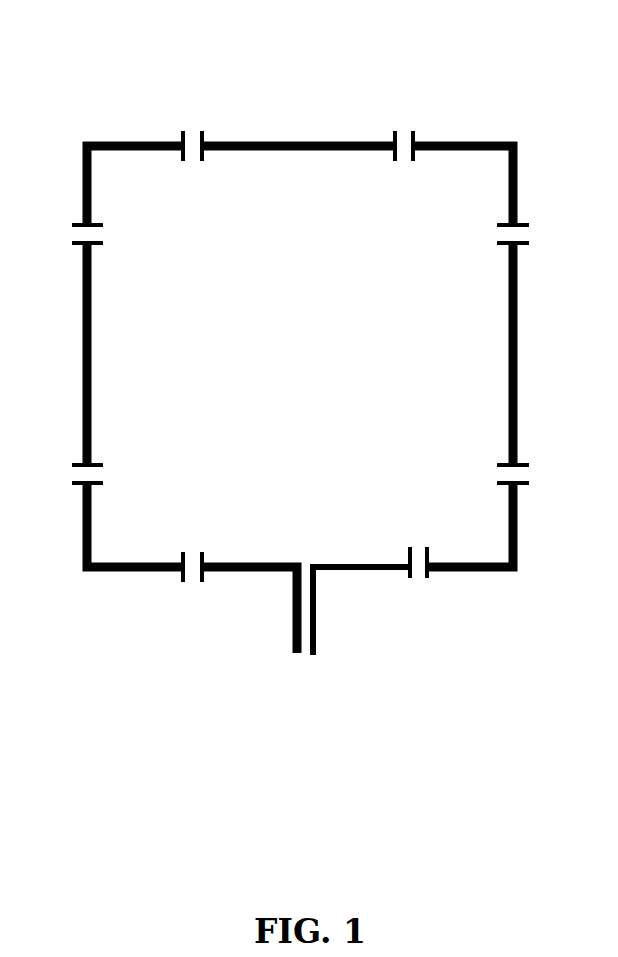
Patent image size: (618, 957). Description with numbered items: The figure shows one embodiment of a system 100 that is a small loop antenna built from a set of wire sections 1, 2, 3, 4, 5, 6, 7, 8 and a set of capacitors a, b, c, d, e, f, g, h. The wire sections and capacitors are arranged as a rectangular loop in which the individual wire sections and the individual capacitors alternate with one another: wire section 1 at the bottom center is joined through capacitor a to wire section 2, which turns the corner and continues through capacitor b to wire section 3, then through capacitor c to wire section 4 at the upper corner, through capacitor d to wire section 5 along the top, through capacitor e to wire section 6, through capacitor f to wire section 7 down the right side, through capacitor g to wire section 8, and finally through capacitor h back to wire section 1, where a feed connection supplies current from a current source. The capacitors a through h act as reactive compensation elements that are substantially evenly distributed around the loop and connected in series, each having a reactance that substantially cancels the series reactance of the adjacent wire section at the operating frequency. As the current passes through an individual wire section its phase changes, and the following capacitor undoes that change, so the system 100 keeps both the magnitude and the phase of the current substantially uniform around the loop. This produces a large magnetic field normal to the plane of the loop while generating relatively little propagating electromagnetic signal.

The system 100 is at (311, 50).
The wire section 1 is at (306, 577).
The wire section 2 is at (135, 525).
The wire section 3 is at (117, 354).
The wire section 4 is at (135, 185).
The wire section 5 is at (298, 180).
The wire section 6 is at (463, 185).
The wire section 7 is at (487, 354).
The wire section 8 is at (470, 525).
The capacitor a is at (197, 598).
The capacitor b is at (64, 475).
The capacitor c is at (64, 235).
The capacitor d is at (197, 122).
The capacitor e is at (408, 122).
The capacitor f is at (528, 235).
The capacitor g is at (531, 476).
The capacitor h is at (424, 595).